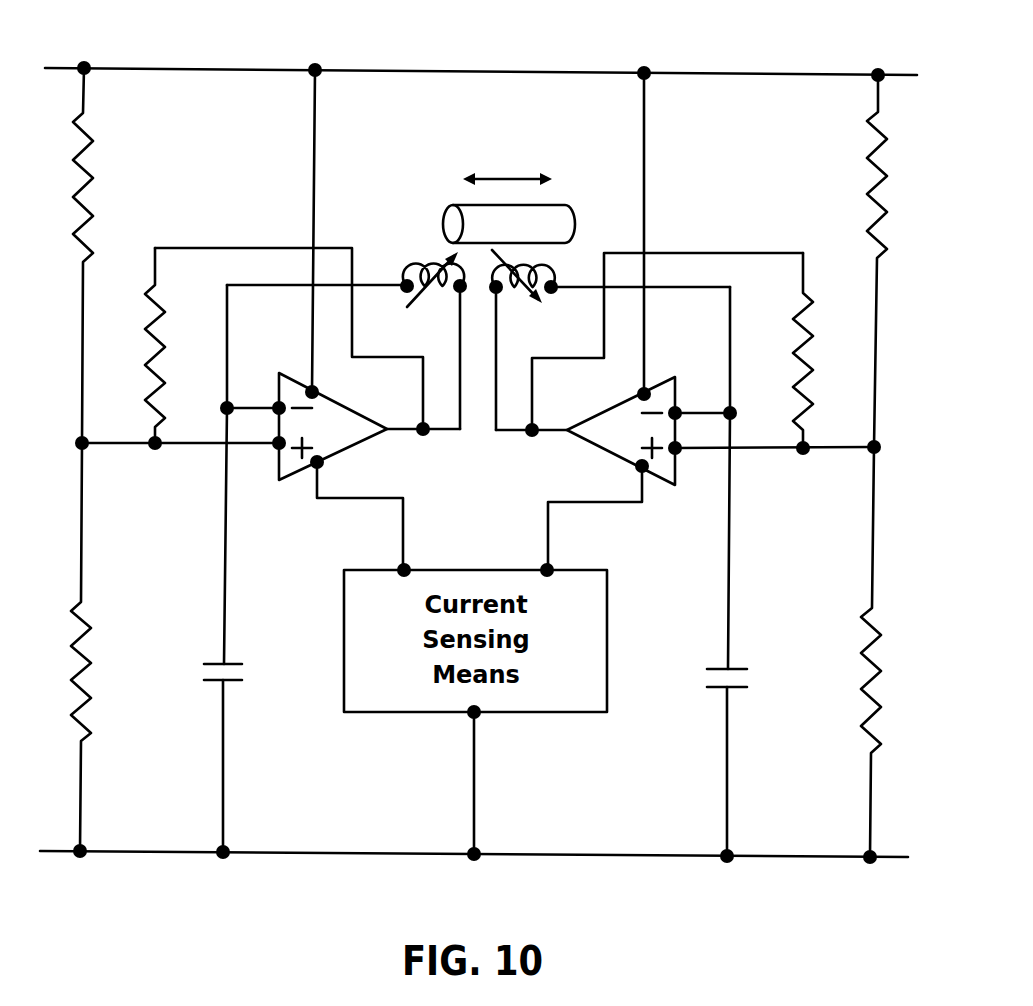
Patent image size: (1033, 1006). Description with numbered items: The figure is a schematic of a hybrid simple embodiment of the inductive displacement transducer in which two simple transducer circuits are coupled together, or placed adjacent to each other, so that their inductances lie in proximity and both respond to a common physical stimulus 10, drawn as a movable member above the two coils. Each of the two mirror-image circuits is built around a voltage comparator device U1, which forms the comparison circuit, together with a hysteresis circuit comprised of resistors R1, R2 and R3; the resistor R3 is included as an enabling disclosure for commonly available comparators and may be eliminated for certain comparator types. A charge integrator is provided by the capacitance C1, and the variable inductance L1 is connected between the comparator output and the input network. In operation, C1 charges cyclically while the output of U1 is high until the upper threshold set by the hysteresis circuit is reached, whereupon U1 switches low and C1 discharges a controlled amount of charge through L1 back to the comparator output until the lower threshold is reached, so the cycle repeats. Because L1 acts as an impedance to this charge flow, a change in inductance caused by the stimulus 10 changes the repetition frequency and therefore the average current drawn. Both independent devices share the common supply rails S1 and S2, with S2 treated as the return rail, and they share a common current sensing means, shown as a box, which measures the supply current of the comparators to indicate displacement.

The common physical stimulus 10 is at (578, 218).
The resistor R1 is at (108, 255).
The resistor R2 is at (106, 647).
The resistor R3 is at (133, 345).
The capacitance C1 is at (246, 630).
The variable inductance L1 is at (479, 292).
The voltage comparator device U1 is at (357, 426).
The supply rail S1 is at (481, 53).
The supply rail S2 is at (474, 876).